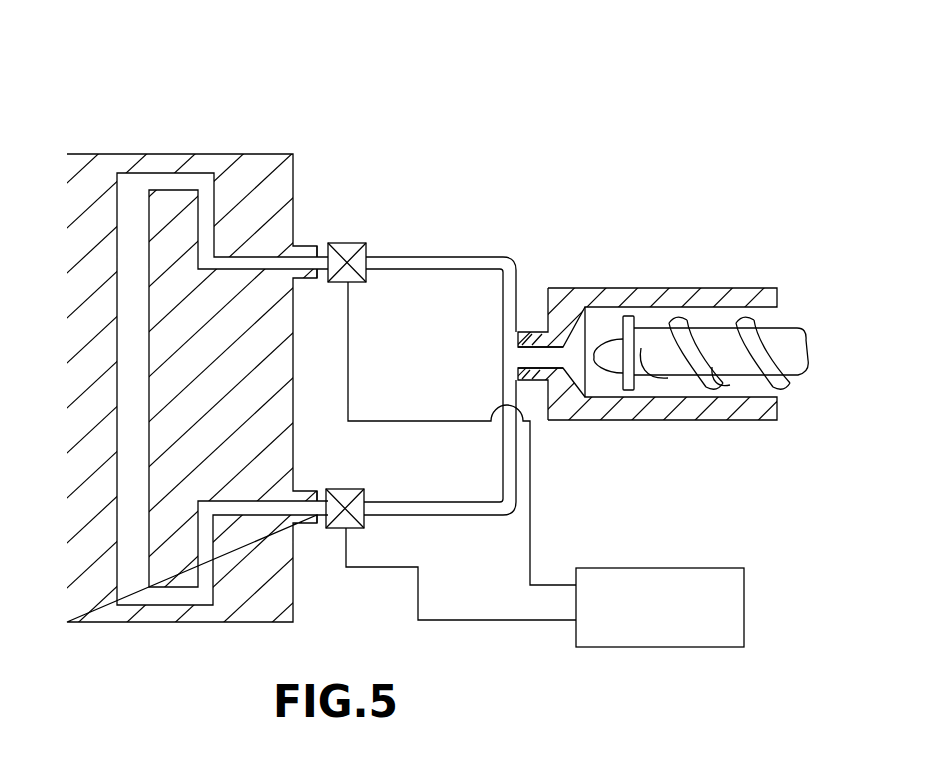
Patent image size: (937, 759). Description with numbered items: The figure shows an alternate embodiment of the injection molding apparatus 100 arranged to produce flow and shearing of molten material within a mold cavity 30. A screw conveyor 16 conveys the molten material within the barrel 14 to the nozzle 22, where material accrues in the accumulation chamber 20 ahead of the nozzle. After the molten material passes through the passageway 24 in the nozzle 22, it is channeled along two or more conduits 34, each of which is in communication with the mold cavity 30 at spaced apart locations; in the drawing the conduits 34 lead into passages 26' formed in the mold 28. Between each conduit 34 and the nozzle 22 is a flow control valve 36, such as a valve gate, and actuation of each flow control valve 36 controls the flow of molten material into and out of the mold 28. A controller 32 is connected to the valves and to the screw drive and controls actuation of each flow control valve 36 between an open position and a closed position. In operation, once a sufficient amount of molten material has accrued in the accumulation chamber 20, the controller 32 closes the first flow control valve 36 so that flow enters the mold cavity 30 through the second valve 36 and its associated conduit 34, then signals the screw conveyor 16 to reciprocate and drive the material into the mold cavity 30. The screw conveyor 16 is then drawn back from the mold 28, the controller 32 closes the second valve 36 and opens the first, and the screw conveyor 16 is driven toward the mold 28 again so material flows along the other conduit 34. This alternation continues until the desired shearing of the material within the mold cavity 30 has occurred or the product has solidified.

The injection molding system 100 is at (405, 82).
The barrel 14 is at (647, 288).
The screw conveyor 16 is at (677, 367).
The accumulation chamber 20 is at (597, 327).
The nozzle 22 is at (542, 332).
The passageway 24 is at (548, 385).
The fluid passages 26' is at (304, 390).
The mold 28 is at (70, 393).
The mold cavity 30 is at (123, 443).
The controller 32 is at (680, 641).
The conduits 34 is at (438, 257).
The flow control valve 36 is at (346, 243).